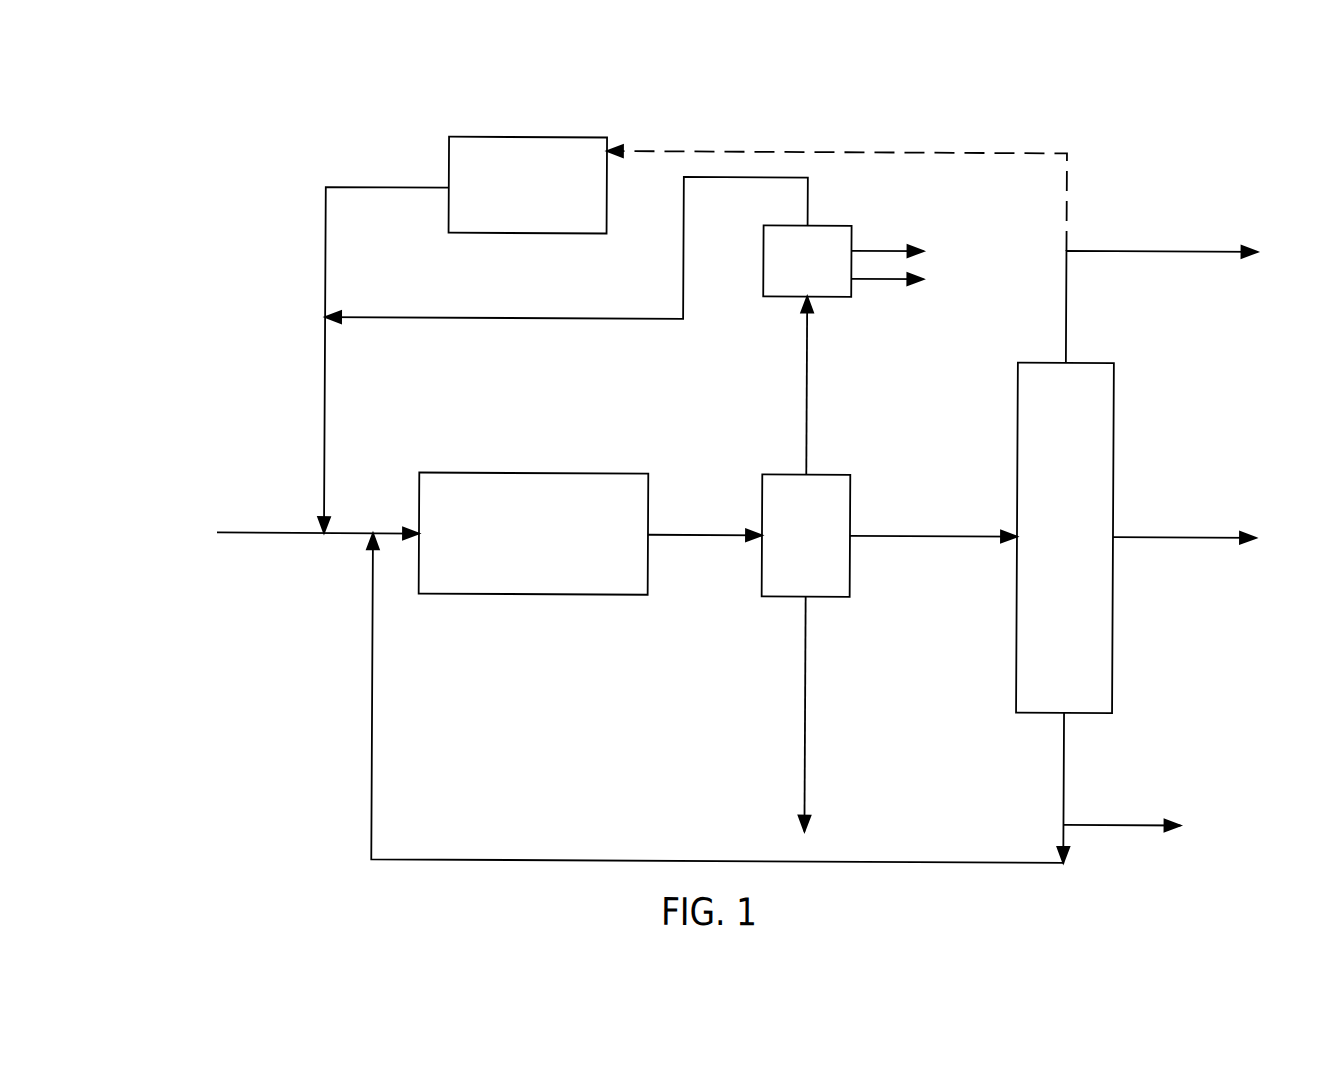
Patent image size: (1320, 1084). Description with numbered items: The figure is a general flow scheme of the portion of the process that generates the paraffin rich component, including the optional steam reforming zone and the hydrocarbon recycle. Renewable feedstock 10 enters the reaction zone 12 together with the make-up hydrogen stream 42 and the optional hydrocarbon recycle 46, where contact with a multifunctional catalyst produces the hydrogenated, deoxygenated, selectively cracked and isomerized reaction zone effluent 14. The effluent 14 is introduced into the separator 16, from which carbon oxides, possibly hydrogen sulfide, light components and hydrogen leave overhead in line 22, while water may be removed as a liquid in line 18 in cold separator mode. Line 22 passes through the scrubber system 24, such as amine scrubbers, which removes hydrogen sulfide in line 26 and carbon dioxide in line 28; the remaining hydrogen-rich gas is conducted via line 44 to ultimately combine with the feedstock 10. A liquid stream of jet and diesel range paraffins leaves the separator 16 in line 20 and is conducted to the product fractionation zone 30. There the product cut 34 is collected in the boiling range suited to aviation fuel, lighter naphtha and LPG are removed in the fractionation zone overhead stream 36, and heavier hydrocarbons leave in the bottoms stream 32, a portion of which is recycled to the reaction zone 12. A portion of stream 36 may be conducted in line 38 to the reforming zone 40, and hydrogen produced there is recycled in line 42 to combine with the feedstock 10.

The renewable feedstock 10 is at (257, 533).
The reaction zone 12 is at (515, 474).
The reaction zone effluent 14 is at (682, 535).
The separator 16 is at (850, 490).
The line 18 is at (806, 760).
The line 20 is at (887, 535).
The line 22 is at (806, 378).
The scrubber system 24 is at (827, 226).
The line 26 is at (887, 249).
The line 28 is at (884, 279).
The product fractionation zone 30 is at (1113, 452).
The bottoms stream 32 is at (1112, 823).
The product cut 34 is at (1175, 536).
The fractionation zone overhead stream 36 is at (1137, 250).
The line 38 is at (898, 152).
The reforming zone 40 is at (572, 138).
The make-up hydrogen stream 42 is at (372, 189).
The line 44 is at (515, 319).
The hydrocarbon recycle 46 is at (633, 861).